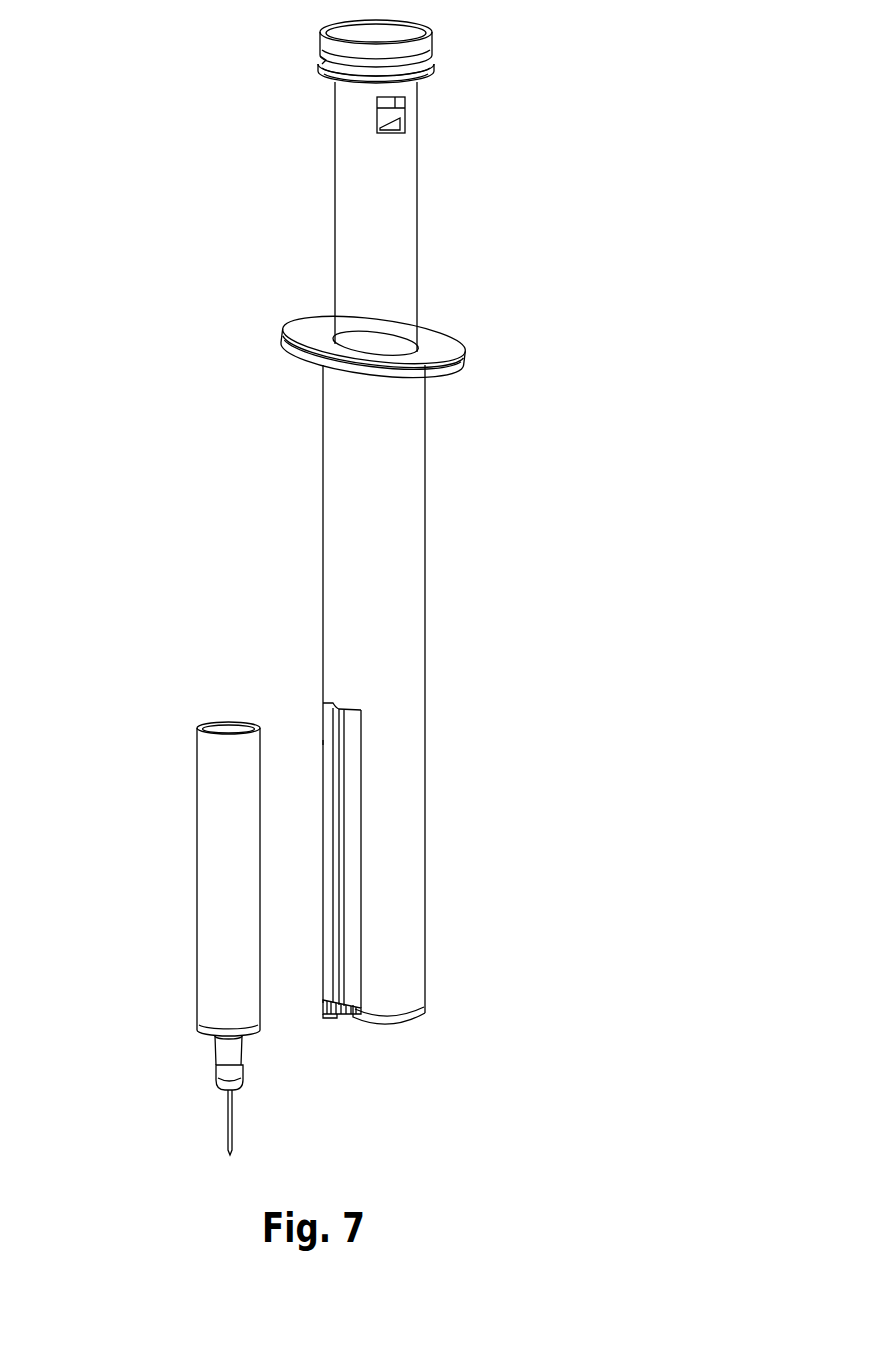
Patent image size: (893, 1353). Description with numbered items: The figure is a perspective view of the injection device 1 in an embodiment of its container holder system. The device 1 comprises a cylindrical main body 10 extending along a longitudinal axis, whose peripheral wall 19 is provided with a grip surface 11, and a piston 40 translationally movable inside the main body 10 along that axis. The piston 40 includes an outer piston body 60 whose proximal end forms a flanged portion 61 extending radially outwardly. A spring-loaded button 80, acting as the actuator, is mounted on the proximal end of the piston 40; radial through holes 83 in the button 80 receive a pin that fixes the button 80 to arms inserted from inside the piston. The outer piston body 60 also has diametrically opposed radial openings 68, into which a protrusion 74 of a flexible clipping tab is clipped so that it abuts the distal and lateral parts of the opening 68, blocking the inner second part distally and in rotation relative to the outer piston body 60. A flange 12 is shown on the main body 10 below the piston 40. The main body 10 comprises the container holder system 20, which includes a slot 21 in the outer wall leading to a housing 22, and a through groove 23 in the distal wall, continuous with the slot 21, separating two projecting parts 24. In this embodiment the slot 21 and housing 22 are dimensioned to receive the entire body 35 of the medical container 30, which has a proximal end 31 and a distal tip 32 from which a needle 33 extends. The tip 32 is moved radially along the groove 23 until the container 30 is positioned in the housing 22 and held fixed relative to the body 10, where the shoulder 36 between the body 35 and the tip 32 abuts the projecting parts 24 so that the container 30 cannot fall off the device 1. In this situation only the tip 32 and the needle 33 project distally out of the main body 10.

The injection device 1 is at (295, 478).
The main body 10 is at (325, 562).
The grip surface 11 is at (425, 518).
The finger flange 12 is at (465, 355).
The peripheral wall 19 is at (425, 606).
The container holder system 20 is at (373, 967).
The slot 21 is at (362, 788).
The housing 22 is at (325, 741).
The through groove 23 is at (346, 1014).
The projecting parts 24 is at (333, 1012).
The medical container 30 is at (197, 893).
The proximal end 31 is at (203, 742).
The tip 32 is at (217, 1068).
The needle 33 is at (227, 1128).
The body 35 is at (198, 838).
The shoulder 36 is at (215, 1040).
The piston 40 is at (333, 200).
The outer piston body 60 is at (420, 212).
The flanged portion 61 is at (435, 76).
The radial openings 68 is at (405, 105).
The protrusion 74 is at (384, 120).
The spring-loaded button 80 is at (432, 45).
The radial through holes 83 is at (320, 56).